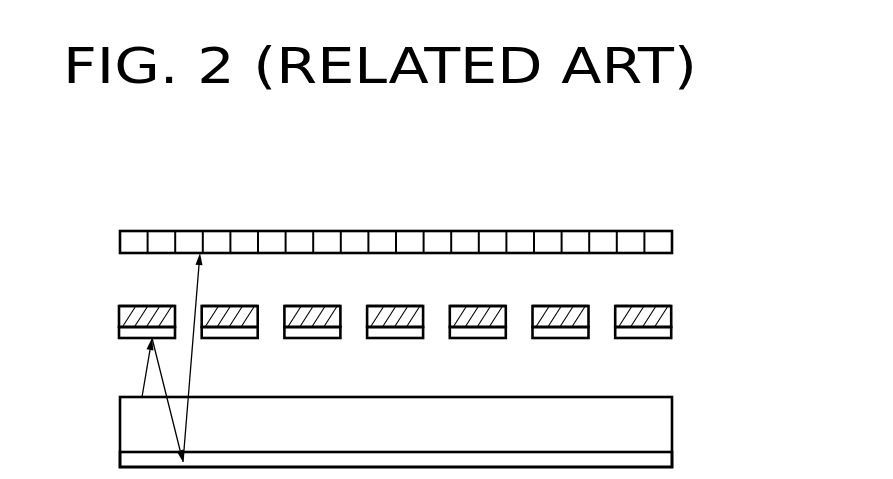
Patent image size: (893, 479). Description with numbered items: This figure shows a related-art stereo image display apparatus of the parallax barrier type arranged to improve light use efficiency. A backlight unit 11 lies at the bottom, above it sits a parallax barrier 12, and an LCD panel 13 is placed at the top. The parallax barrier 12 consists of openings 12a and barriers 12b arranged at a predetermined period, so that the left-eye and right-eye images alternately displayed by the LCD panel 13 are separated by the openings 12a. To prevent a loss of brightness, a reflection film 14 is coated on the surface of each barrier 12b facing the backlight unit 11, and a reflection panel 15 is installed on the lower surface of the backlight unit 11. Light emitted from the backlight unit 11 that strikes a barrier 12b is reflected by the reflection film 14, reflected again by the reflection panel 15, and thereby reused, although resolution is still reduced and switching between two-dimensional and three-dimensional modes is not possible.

The backlight unit 11 is at (665, 424).
The parallax barrier 12 is at (464, 321).
The opening 12a is at (603, 320).
The barrier 12b is at (668, 318).
The LCD panel 13 is at (663, 242).
The reflection film 14 is at (665, 336).
The reflection panel 15 is at (665, 459).